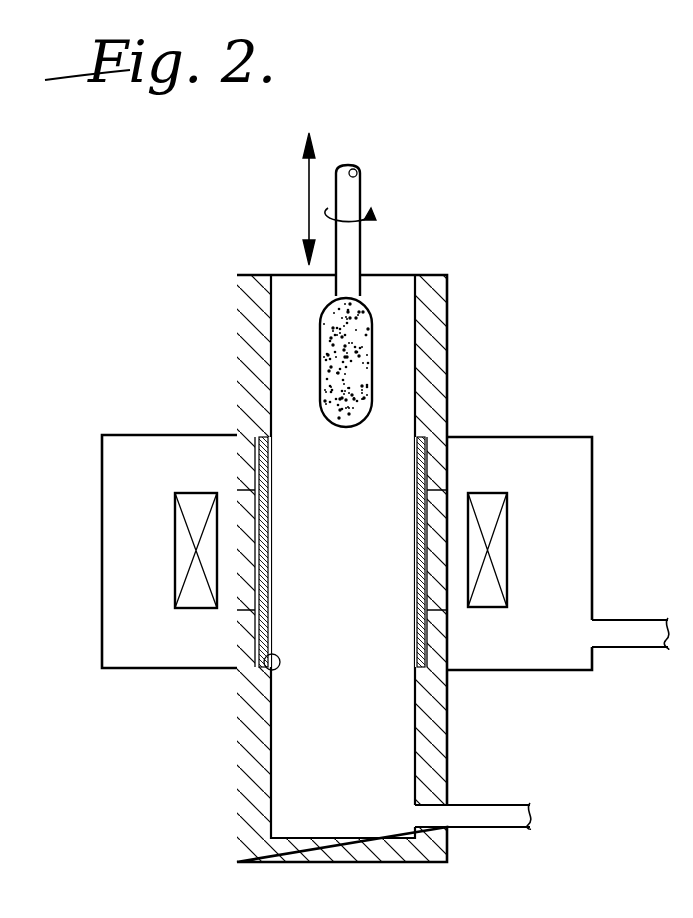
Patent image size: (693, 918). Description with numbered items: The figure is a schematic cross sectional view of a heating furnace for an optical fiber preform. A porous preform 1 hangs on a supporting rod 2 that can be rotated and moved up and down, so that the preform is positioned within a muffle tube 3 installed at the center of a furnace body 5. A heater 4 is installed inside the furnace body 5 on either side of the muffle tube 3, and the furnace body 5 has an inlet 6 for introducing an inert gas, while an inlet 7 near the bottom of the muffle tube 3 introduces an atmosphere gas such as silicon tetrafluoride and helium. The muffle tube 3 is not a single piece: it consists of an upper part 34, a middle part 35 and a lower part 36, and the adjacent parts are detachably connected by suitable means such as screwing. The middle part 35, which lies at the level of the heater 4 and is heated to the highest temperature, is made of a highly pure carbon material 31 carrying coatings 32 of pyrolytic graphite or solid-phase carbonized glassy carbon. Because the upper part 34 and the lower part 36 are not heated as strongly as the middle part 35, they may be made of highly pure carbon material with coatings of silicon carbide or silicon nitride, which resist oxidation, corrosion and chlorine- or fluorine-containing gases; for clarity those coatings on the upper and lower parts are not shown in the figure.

The porous preform 1 is at (365, 307).
The supporting rod 2 is at (345, 197).
The muffle tube 3 is at (450, 284).
The heater 4 is at (177, 527).
The furnace body 5 is at (592, 437).
The inlet for introducing an inert gas 6 is at (640, 640).
The inlet for introducing an atmosphere gas 7 is at (515, 820).
The highly pure carbon material 31 is at (428, 595).
The coating 32 is at (237, 683).
The upper part 34 is at (436, 331).
The middle part 35 is at (238, 497).
The lower part 36 is at (242, 787).